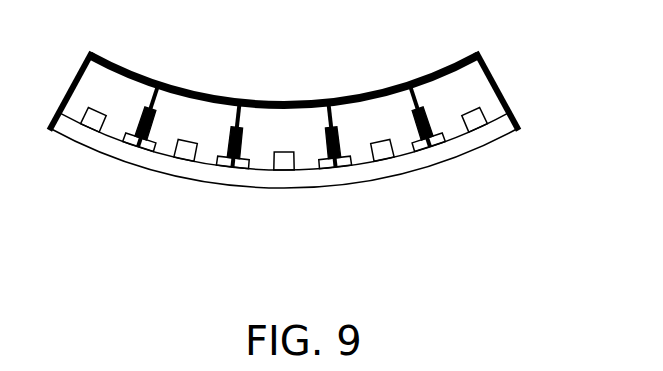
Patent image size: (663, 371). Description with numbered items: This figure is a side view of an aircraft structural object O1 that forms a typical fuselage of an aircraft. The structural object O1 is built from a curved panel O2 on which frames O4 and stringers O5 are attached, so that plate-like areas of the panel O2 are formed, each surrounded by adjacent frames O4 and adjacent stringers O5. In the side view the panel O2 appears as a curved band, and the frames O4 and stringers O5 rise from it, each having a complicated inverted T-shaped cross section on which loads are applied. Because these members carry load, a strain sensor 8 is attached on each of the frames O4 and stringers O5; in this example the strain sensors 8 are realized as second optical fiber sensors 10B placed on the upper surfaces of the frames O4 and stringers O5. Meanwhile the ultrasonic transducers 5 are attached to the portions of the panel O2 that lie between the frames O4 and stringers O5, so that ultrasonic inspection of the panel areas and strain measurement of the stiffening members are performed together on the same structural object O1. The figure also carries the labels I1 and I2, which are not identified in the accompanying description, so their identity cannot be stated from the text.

The strain sensor 8 is at (282, 103).
The second optical fiber sensor 10B is at (367, 93).
The ultrasonic transducer 5 is at (93, 122).
The frame O4 is at (118, 121).
The inner element I2 is at (147, 146).
The inner band I1 is at (287, 180).
The stringer O5 is at (437, 141).
The panel O2 is at (477, 148).
The aircraft structural object O1 is at (498, 144).